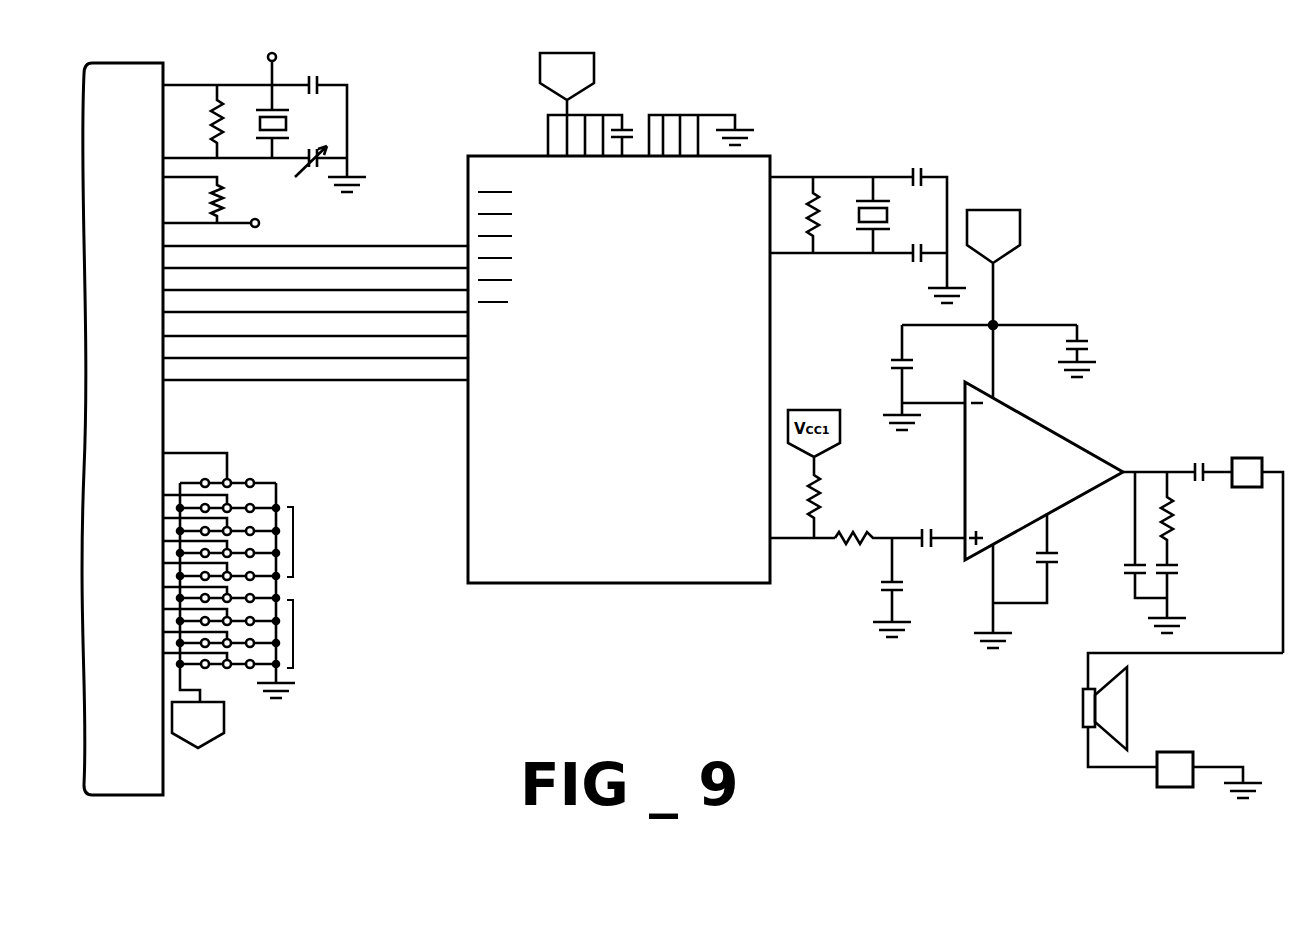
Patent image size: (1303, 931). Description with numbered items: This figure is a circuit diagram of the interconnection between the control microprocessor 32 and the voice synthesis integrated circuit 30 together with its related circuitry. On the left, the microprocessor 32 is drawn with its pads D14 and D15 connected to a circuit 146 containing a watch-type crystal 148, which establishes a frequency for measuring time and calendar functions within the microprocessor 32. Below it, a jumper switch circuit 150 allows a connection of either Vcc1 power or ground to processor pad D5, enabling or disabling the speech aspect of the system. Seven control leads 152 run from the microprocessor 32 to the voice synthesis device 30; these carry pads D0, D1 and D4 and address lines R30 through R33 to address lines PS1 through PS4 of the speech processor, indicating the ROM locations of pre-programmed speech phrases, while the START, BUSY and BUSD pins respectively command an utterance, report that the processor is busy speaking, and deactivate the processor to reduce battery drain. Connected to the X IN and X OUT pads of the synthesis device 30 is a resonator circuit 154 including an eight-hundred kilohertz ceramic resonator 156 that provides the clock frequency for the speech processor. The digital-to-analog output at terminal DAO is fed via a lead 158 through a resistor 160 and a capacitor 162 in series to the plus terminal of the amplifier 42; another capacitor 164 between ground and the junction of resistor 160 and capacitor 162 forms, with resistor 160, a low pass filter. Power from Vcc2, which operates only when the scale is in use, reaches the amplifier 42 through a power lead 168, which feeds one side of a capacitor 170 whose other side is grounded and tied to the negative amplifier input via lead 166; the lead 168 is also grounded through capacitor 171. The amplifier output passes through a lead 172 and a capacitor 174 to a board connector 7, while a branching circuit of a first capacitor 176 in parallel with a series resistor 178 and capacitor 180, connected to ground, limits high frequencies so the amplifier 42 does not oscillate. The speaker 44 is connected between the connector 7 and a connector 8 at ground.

The voice synthesis integrated circuit 30 is at (643, 378).
The microprocessor 32 is at (165, 765).
The amplifier 42 is at (1035, 489).
The speaker 44 is at (1128, 697).
The board connector 7 is at (1257, 555).
The connector 8 is at (1209, 775).
The circuit 146 is at (324, 86).
The watch-type crystal 148 is at (286, 123).
The jumper switch circuit 150 is at (228, 480).
The control leads 152 is at (373, 338).
The resonator circuit 154 is at (887, 177).
The ceramic resonator 156 is at (887, 215).
The lead 158 is at (791, 543).
The resistor 160 is at (857, 532).
The capacitor 162 is at (926, 530).
The capacitor 164 is at (903, 584).
The lead 166 is at (936, 403).
The power lead 168 is at (993, 296).
The capacitor 170 is at (895, 364).
The capacitor 171 is at (1088, 340).
The lead 172 is at (1150, 470).
The capacitor 174 is at (1200, 455).
The first capacitor 176 is at (1130, 570).
The resistor 178 is at (1175, 520).
The capacitor 180 is at (1178, 568).